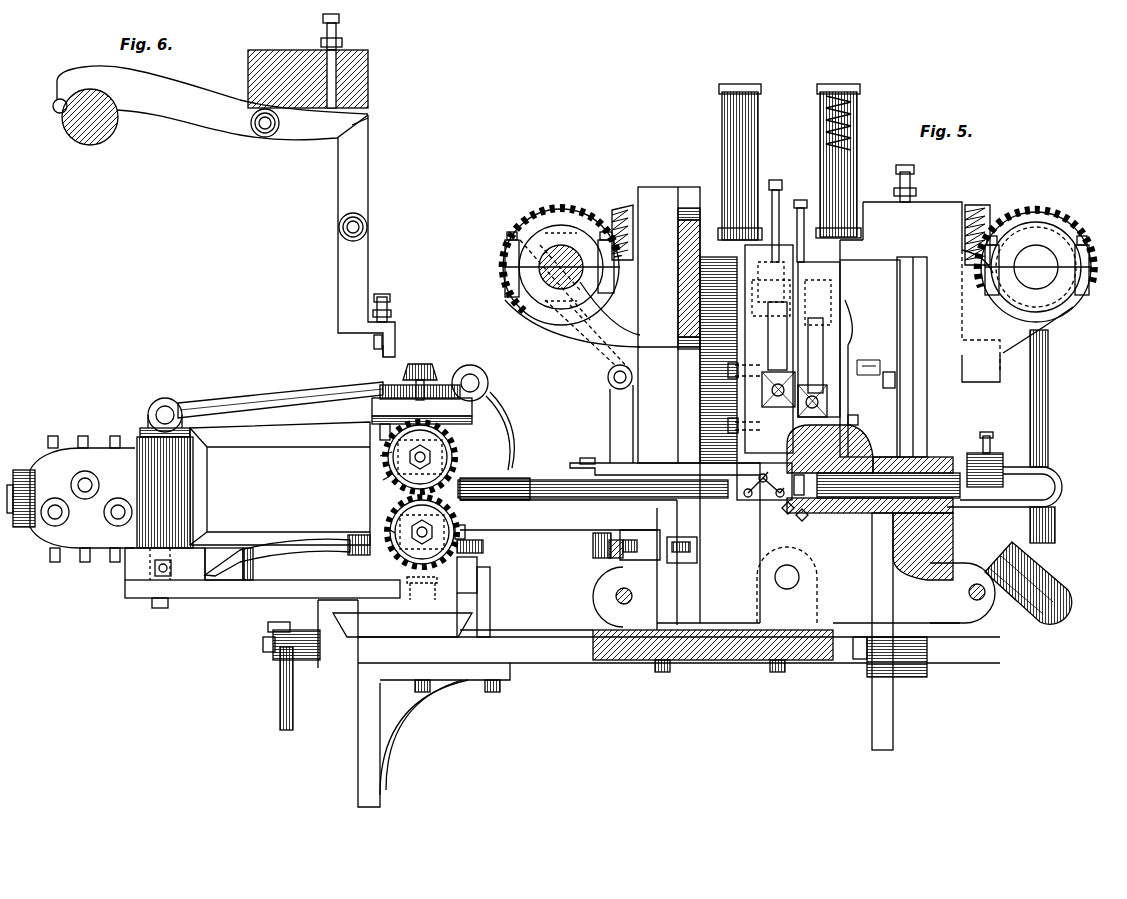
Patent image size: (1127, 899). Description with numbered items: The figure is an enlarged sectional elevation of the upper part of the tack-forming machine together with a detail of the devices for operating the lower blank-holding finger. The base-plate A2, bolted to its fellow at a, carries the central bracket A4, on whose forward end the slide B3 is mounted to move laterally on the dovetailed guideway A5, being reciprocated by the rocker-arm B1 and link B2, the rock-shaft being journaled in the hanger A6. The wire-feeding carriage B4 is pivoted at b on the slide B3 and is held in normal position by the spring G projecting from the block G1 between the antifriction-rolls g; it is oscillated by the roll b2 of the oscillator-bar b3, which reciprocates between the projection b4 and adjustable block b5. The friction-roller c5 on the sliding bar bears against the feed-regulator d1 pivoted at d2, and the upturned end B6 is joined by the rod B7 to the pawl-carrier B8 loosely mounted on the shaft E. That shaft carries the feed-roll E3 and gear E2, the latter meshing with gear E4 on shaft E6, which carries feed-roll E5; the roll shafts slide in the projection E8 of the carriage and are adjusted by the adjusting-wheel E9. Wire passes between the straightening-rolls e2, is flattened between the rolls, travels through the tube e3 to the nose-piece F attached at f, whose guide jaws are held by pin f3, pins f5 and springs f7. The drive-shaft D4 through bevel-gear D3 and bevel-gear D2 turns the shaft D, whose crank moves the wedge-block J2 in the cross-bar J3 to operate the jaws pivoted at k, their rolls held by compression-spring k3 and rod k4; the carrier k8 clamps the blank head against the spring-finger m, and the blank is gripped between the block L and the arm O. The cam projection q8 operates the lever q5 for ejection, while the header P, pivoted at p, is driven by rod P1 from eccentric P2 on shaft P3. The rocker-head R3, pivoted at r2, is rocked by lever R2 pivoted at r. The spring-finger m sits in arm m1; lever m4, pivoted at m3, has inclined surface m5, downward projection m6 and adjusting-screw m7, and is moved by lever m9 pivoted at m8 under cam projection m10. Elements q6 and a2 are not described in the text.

In FIG. 6, the cross-bar J3 is at (248, 78).
In FIG. 5, the cross-bar J3 is at (931, 273).
In FIG. 6, the lever m9 is at (215, 120).
In FIG. 6, the shaft D is at (100, 128).
In FIG. 5, the shaft D is at (870, 348).
In FIG. 6, the cam projection m10 is at (53, 105).
In FIG. 6, the pivot m8 is at (264, 132).
In FIG. 6, the inclined surface m5 is at (368, 125).
In FIG. 6, the lever m4 is at (360, 182).
In FIG. 5, the lever m4 is at (900, 334).
In FIG. 6, the pivot m3 is at (367, 224).
In FIG. 5, the pivot m3 is at (889, 388).
In FIG. 6, the adjusting-screw m7 is at (388, 302).
In FIG. 6, the downward projection m6 is at (396, 346).
In FIG. 6, the spring-finger m is at (375, 347).
In FIG. 5, the spring-finger m is at (1010, 507).
In FIG. 5, the straightening-rolls e2 is at (99, 484).
In FIG. 5, the upturned end of sliding bar B6 is at (160, 400).
In FIG. 5, the wire-feeding carriage B4 is at (287, 462).
In FIG. 5, the rod B7 is at (300, 396).
In FIG. 5, the adjusting-wheel E9 is at (400, 376).
In FIG. 5, the pawl-carrier B8 is at (496, 400).
In FIG. 5, the shaft E is at (445, 452).
In FIG. 5, the gear E2 is at (400, 507).
In FIG. 5, the upward projection of carriage E8 is at (380, 437).
In FIG. 5, the gear E4 is at (388, 456).
In FIG. 5, the feed-roll E3 is at (380, 480).
In FIG. 5, the feed-roll E5 is at (395, 530).
In FIG. 5, the shaft E6 is at (462, 530).
In FIG. 5, the tube e3 is at (552, 498).
In FIG. 5, the nose-piece F is at (722, 466).
In FIG. 5, the attachment point of nose-piece f is at (586, 458).
In FIG. 5, the block L is at (720, 543).
In FIG. 5, the bolts a is at (616, 597).
In FIG. 5, the pivot of header p is at (790, 584).
In FIG. 5, the central bracket A4 is at (576, 664).
In FIG. 5, the dovetailed guideway A5 is at (440, 625).
In FIG. 5, the hanger A6 is at (372, 778).
In FIG. 5, the slide B3 is at (253, 592).
In FIG. 5, the pivot of carriage b is at (160, 610).
In FIG. 5, the block G1 is at (232, 573).
In FIG. 5, the spring G is at (302, 552).
In FIG. 5, the antifriction-rolls g is at (360, 556).
In FIG. 5, the link B2 is at (272, 662).
In FIG. 5, the rocker-arm B1 is at (280, 710).
In FIG. 5, the roll b2 is at (488, 547).
In FIG. 5, the oscillator-bar b3 is at (478, 570).
In FIG. 5, the projection b4 is at (490, 586).
In FIG. 5, the adjustable block b5 is at (472, 612).
In FIG. 5, the friction-roller c5 is at (594, 544).
In FIG. 5, the feed-regulator d1 is at (636, 550).
In FIG. 5, the pivot of feed-regulators d2 is at (628, 536).
In FIG. 5, the base-plate A2 is at (640, 440).
In FIG. 5, the bevel-gear D3 is at (561, 257).
In FIG. 5, the cam projection q8 is at (560, 242).
In FIG. 5, the drive-shaft D4 is at (505, 258).
In FIG. 5, the bevel-gear D2 is at (624, 225).
In FIG. 5, the pivot q6 is at (607, 377).
In FIG. 5, the lever q5 is at (618, 406).
In FIG. 5, the arm O is at (718, 360).
In FIG. 5, the rod k4 is at (730, 240).
In FIG. 5, the compression-spring k3 is at (855, 132).
In FIG. 5, the wedge-block J2 is at (792, 344).
In FIG. 5, the jaw pivot k is at (777, 404).
In FIG. 5, the shaft P3 is at (1036, 266).
In FIG. 5, the eccentric P2 is at (1075, 300).
In FIG. 5, the rocker-head R3 is at (838, 428).
In FIG. 5, the pivot of rocker-head r2 is at (884, 463).
In FIG. 5, the lever R2 is at (893, 717).
In FIG. 5, the pivot of lever r is at (858, 655).
In FIG. 5, the arm m1 is at (992, 457).
In FIG. 5, the rod connection P1 is at (1048, 440).
In FIG. 5, the header P is at (1001, 581).
In FIG. 5, the pivot a2 is at (982, 600).
In FIG. 5, the pins f5 is at (764, 481).
In FIG. 5, the pin f3 is at (769, 471).
In FIG. 5, the springs f7 is at (784, 484).
In FIG. 5, the carrier k8 is at (802, 485).